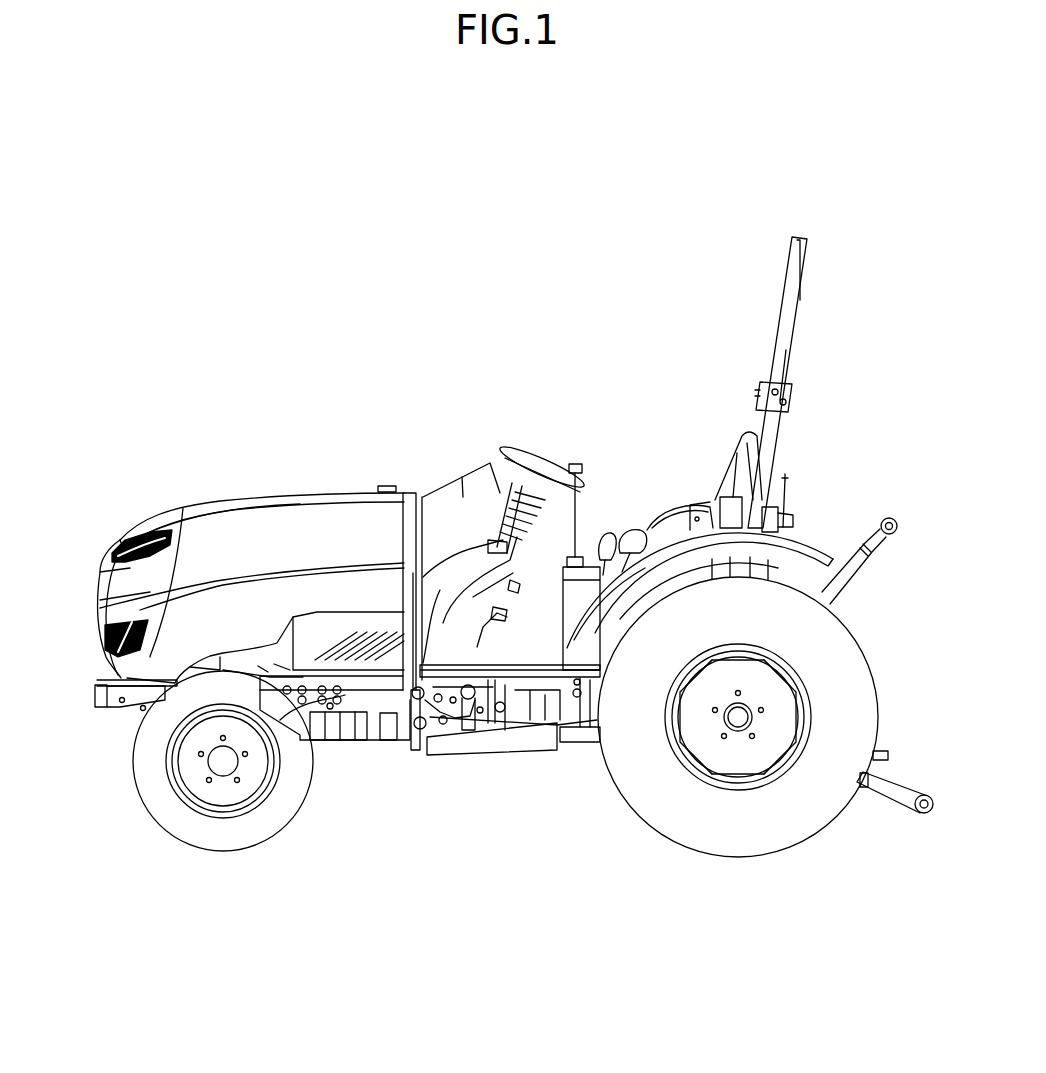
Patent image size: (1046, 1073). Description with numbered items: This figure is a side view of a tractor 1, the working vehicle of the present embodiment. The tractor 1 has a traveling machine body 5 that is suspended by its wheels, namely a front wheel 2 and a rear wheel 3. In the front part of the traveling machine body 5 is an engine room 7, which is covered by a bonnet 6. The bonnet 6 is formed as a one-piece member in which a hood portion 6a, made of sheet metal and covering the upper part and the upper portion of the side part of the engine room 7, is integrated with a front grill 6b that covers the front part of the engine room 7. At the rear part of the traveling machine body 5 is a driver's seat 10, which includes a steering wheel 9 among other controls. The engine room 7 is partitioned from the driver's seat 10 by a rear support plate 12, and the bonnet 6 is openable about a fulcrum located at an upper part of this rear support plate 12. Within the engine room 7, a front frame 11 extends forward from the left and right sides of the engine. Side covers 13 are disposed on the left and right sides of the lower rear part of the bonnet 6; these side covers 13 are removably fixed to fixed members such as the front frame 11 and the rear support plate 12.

The tractor 1 is at (460, 268).
The front wheel 2 is at (272, 817).
The rear wheel 3 is at (650, 817).
The traveling machine body 5 is at (380, 765).
The bonnet 6 is at (247, 551).
The hood portion 6a is at (242, 500).
The front grill 6b is at (97, 580).
The engine room 7 is at (228, 532).
The steering wheel 9 is at (515, 450).
The driver's seat 10 is at (615, 460).
The front frame 11 is at (117, 707).
The rear support plate 12 is at (412, 497).
The side cover 13 is at (350, 665).